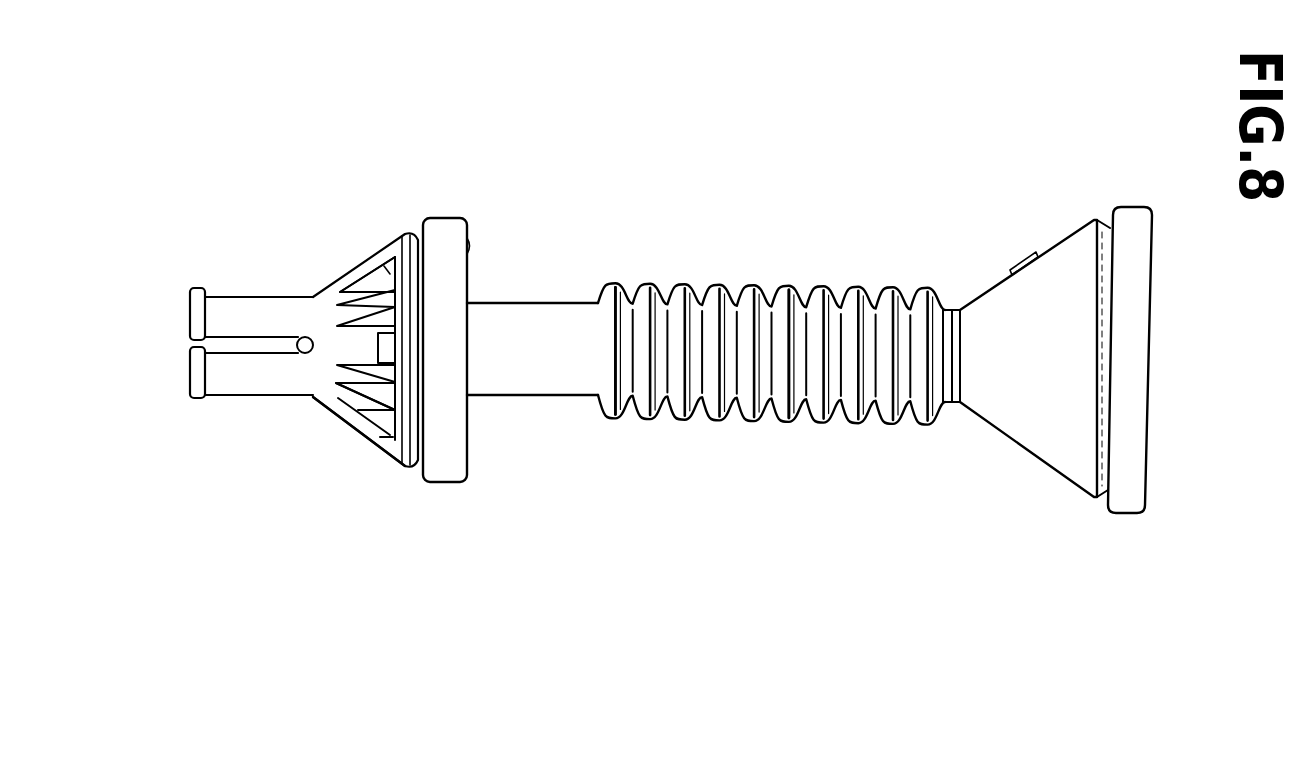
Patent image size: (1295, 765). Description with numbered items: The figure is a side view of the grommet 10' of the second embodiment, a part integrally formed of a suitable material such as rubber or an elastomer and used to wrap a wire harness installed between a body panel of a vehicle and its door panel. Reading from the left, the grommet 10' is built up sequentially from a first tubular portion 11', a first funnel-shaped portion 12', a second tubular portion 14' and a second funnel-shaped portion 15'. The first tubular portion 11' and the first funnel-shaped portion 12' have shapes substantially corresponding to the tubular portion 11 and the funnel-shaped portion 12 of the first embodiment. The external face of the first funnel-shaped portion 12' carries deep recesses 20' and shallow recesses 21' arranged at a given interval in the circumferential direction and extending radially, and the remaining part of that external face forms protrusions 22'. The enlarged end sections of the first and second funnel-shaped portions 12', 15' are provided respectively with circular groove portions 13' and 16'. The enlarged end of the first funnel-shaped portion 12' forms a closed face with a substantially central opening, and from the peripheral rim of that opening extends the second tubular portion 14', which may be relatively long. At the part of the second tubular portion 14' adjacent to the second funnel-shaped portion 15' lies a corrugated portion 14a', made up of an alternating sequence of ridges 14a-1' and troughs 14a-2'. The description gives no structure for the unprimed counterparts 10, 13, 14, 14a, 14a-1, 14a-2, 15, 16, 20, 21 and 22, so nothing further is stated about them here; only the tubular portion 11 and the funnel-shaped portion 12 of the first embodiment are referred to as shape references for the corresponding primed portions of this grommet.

The grommet 10' is at (365, 245).
The first tubular portion 11' is at (244, 408).
The first funnel-shaped portion 12' is at (359, 493).
The circular groove portion 13' is at (432, 403).
The second tubular portion 14' is at (532, 417).
The corrugated portion 14a' is at (779, 439).
The ridges 14a-1' is at (678, 413).
The troughs 14a-2' is at (831, 414).
The second funnel-shaped portion 15' is at (1031, 393).
The circular groove portion 16' is at (1117, 420).
The deep recesses 20' is at (356, 298).
The shallow recesses 21' is at (315, 241).
The protrusions 22' is at (336, 452).
The connector 10 is at (365, 245).
The tubular portion 11 is at (244, 408).
The funnel-shaped portion 12 is at (359, 493).
The flange 13 is at (432, 403).
The tube portion 14 is at (532, 417).
The bellows portion 14a is at (779, 439).
The bellows crest 14a-1 is at (678, 413).
The bellows crest 14a-2 is at (831, 414).
The conical portion 15 is at (1031, 393).
The end cap 16 is at (1117, 420).
The rib structure 20 is at (356, 298).
The rib 21 is at (315, 241).
The rib 22 is at (336, 452).